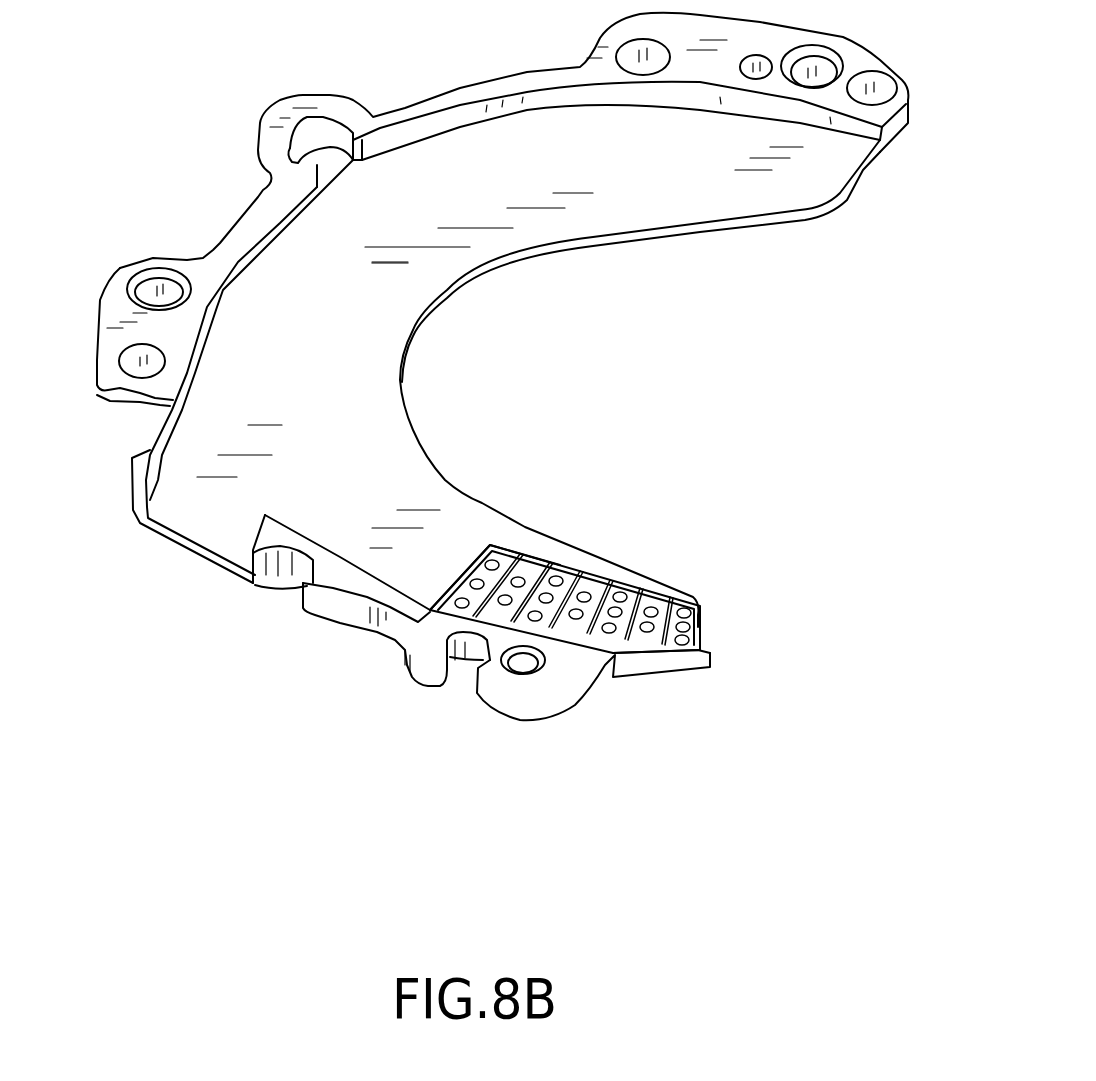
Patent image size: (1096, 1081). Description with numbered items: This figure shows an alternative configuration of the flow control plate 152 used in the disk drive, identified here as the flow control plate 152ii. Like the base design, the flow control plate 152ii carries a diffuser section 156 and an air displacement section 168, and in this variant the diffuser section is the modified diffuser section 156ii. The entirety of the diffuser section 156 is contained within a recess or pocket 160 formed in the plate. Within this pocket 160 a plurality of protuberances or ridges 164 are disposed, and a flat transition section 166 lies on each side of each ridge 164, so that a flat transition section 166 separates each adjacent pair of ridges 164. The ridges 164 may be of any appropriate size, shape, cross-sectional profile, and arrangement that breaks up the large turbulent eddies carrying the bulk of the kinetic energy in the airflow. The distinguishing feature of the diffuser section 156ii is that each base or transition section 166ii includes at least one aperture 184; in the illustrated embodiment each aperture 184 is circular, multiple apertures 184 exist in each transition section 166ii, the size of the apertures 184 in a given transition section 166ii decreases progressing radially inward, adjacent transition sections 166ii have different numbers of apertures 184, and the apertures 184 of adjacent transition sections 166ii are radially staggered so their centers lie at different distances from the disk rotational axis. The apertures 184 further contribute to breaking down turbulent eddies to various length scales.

The flow control plate 152ii is at (133, 107).
The flow control plate 152 is at (472, 320).
The air displacement section 168 is at (668, 277).
The diffuser section 156ii is at (679, 743).
The diffuser section 156 is at (523, 631).
The recess or pocket 160 is at (472, 557).
The protuberances or ridges 164 is at (508, 553).
The base or transition section 166ii is at (527, 557).
The flat transition section 166 is at (573, 532).
The aperture 184 is at (657, 600).